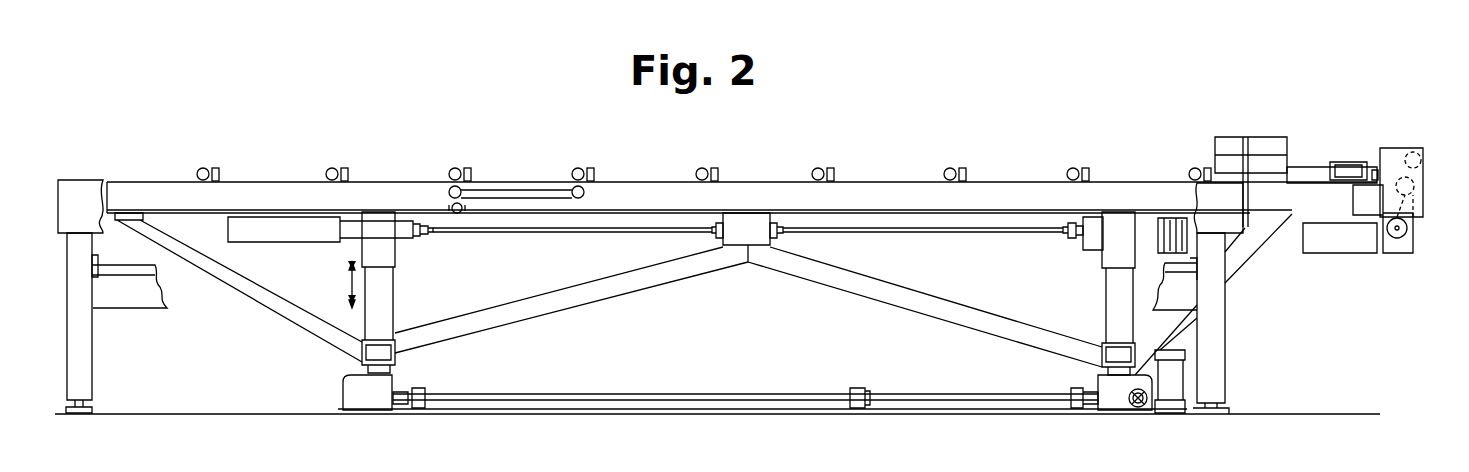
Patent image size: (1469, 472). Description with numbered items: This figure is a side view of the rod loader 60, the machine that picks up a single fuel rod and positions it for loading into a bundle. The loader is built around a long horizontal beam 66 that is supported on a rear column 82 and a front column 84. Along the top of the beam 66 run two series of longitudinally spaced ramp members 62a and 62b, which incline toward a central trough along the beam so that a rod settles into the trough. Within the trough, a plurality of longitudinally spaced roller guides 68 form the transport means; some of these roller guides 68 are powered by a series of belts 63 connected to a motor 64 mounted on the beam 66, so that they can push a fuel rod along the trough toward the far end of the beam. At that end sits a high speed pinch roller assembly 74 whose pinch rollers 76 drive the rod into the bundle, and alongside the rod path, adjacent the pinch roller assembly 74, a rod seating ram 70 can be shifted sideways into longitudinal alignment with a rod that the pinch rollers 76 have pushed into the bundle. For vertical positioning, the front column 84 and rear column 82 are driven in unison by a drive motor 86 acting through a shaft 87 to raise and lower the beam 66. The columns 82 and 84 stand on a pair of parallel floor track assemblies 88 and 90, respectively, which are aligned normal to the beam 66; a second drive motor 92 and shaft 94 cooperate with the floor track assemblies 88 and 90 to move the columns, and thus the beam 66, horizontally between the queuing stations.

The rod loader 60 is at (238, 90).
The ramp members 62a is at (208, 168).
The ramp members 62b is at (585, 168).
The belts 63 is at (513, 190).
The motor 64 is at (452, 203).
The beam 66 is at (107, 186).
The roller guides 68 is at (203, 172).
The rod seating ram 70 is at (1352, 165).
The pinch roller assembly 74 is at (1400, 146).
The pinch rollers 76 is at (1412, 168).
The rear column 82 is at (390, 287).
The front column 84 is at (1105, 288).
The drive motor 86 is at (1090, 250).
The shaft 87 is at (555, 233).
The floor track assembly 88 is at (395, 381).
The floor track assembly 90 is at (1105, 381).
The drive motor 92 is at (1142, 407).
The shaft 94 is at (735, 392).